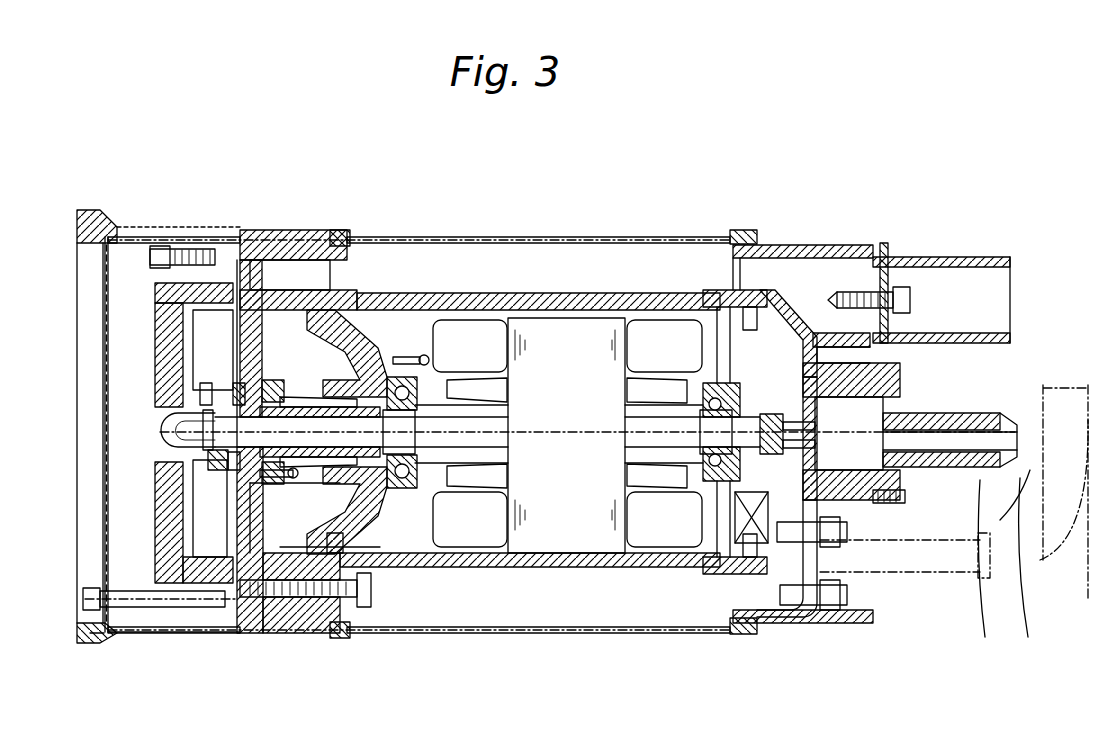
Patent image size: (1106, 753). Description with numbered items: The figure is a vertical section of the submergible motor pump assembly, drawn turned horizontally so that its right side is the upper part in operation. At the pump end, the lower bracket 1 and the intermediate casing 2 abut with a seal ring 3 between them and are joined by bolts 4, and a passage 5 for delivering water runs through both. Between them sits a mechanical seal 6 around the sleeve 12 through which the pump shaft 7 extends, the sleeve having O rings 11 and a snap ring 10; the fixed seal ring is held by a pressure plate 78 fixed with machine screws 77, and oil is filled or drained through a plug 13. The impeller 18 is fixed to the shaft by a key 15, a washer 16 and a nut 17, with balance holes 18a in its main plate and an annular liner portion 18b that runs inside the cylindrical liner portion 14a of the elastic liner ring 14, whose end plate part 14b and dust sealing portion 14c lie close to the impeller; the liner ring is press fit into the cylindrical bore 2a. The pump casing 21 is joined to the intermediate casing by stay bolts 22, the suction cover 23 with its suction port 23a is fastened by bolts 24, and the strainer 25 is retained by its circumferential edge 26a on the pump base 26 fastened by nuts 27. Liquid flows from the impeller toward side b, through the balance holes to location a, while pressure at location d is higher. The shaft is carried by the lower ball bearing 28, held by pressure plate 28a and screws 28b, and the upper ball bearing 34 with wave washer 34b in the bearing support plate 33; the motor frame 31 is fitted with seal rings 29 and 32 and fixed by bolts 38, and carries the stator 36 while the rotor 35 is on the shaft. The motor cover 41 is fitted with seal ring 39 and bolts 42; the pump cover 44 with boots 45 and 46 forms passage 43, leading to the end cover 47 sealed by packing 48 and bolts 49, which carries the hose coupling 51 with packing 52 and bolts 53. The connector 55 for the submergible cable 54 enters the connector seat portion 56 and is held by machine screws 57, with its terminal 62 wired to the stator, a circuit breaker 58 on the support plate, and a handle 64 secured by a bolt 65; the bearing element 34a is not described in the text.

The lower bracket 1 is at (320, 232).
The intermediate casing 2 is at (258, 230).
The cylindrical bore 2a is at (238, 582).
The seal ring 3 is at (272, 260).
The bolts 4 is at (250, 592).
The passage 5 is at (255, 230).
The mechanical seal 6 is at (428, 634).
The pump shaft 7 is at (555, 330).
The snap ring 10 is at (272, 392).
The O rings 11 is at (428, 315).
The sleeve 12 is at (393, 308).
The plug 13 is at (292, 615).
The liner ring 14 is at (300, 250).
The cylindrical liner portion 14a is at (228, 492).
The end plate part 14b is at (265, 378).
The dust sealing portion 14c is at (265, 432).
The key 15 is at (170, 443).
The washer 16 is at (165, 352).
The nut 17 is at (185, 395).
The impeller 18 is at (205, 600).
The balance holes 18a is at (190, 460).
The annular projected liner portion 18b is at (195, 478).
The pump casing 21 is at (212, 248).
The stay bolts 22 is at (124, 643).
The suction cover 23 is at (160, 293).
The suction port 23a is at (180, 400).
The bolts 24 is at (140, 243).
The strainer 25 is at (152, 634).
The pump base 26 is at (103, 418).
The circumferential edge 26a is at (90, 643).
The nuts 27 is at (95, 590).
The lower ball bearing 28 is at (498, 633).
The pressure plate 28a is at (495, 250).
The screws 28b is at (480, 330).
The seal ring 29 is at (388, 236).
The motor frame 31 is at (700, 250).
The seal ring 32 is at (790, 250).
The bearing support plate 33 is at (768, 250).
The upper ball bearing 34 is at (640, 520).
The bearing inner race 34a is at (600, 520).
The wave washer 34b is at (675, 520).
The rotor 35 is at (630, 250).
The stator 36 is at (650, 245).
The bolts 38 is at (360, 607).
The seal ring 39 is at (812, 250).
The motor cover 41 is at (865, 250).
The bolts 42 is at (775, 620).
The passage 43 is at (572, 250).
The pump cover 44 is at (732, 230).
The boot 45 is at (350, 232).
The boot 46 is at (750, 243).
The end cover 47 is at (835, 250).
The packing 48 is at (832, 352).
The bolts 49 is at (852, 540).
The hose coupling 51 is at (1000, 265).
The packing 52 is at (897, 262).
The bolts 53 is at (954, 230).
The submergible cable 54 is at (1022, 545).
The connector 55 is at (1002, 569).
The connector seat portion 56 is at (880, 372).
The machine screws 57 is at (908, 497).
The circuit breaker 58 is at (688, 600).
The terminal 62 is at (783, 425).
The handle 64 is at (1062, 560).
The bolt 65 is at (830, 612).
The machine screws 77 is at (382, 600).
The pressure plate 78 is at (268, 590).
The location a is at (207, 395).
The side b is at (240, 393).
The location d is at (178, 246).